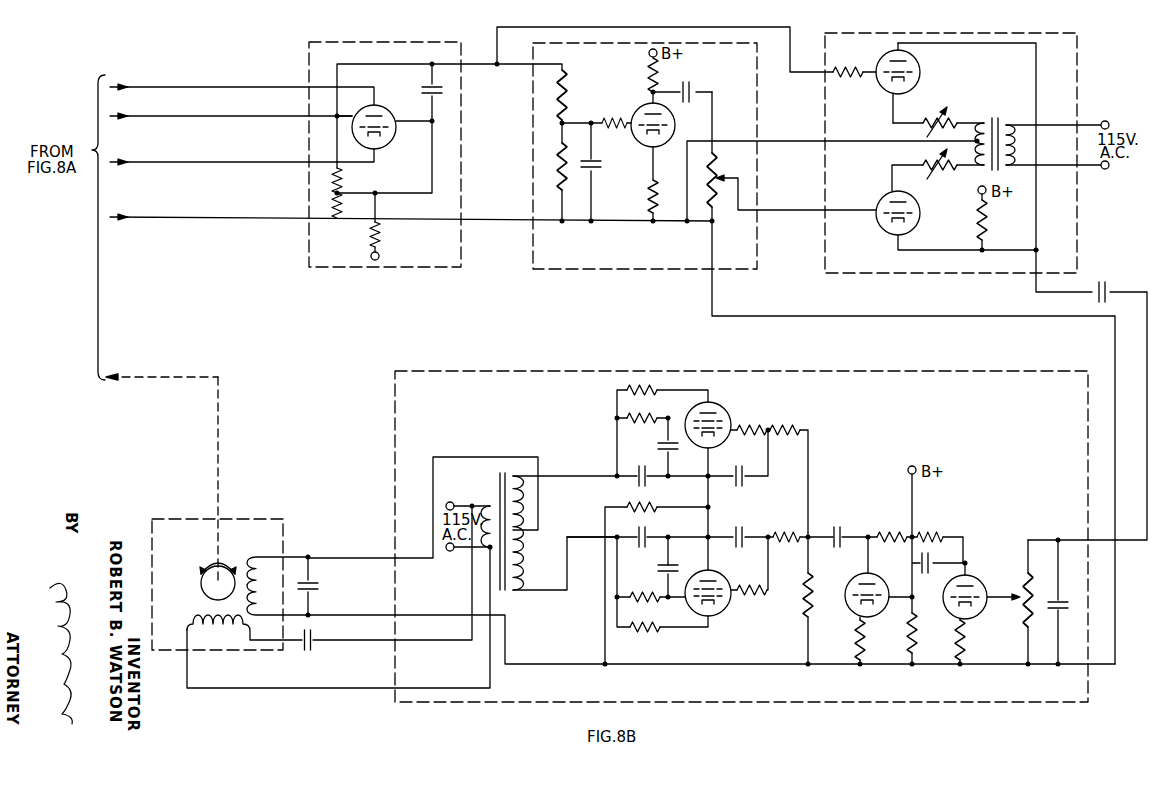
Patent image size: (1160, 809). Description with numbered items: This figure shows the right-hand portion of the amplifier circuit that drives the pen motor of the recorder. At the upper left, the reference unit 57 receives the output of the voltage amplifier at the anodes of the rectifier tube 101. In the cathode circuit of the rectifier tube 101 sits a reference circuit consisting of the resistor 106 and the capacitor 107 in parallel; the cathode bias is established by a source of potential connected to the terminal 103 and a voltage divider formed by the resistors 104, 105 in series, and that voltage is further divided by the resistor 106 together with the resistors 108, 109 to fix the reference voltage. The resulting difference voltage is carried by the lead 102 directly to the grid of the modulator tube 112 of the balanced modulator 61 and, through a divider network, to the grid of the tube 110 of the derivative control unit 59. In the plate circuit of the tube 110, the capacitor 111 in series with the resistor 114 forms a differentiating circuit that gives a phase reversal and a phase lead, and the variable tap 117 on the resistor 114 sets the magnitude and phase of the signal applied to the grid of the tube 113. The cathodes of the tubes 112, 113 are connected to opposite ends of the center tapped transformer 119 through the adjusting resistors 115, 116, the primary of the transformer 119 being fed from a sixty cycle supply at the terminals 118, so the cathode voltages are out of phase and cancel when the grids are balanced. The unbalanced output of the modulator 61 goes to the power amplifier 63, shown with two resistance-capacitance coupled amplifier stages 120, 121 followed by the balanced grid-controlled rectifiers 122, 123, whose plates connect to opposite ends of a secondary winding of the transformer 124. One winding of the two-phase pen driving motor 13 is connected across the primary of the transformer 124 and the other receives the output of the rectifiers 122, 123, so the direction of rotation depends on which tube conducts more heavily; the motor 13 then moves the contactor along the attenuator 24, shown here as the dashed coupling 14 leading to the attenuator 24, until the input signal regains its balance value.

The pen driving motor 13 is at (262, 518).
The shaft coupling to attenuator 14 is at (226, 438).
The attenuator 24 is at (187, 359).
The reference unit 57 is at (431, 268).
The derivative control unit 59 is at (634, 269).
The balanced modulator 61 is at (954, 273).
The power amplifier 63 is at (942, 702).
The rectifier tube 101 is at (382, 147).
The lead 102 is at (478, 60).
The terminal 103 is at (371, 256).
The resistor 104 is at (372, 240).
The resistor 105 is at (333, 207).
The resistor 106 is at (333, 186).
The capacitor 107 is at (428, 89).
The resistor 108 is at (570, 105).
The resistor 109 is at (560, 158).
The tube 110 is at (662, 145).
The capacitor 111 is at (699, 81).
The modulator tube 112 is at (920, 68).
The tube 113 is at (920, 215).
The resistor 114 is at (717, 170).
The adjusting resistor 115 is at (945, 114).
The adjusting resistor 116 is at (927, 178).
The tap 117 is at (734, 186).
The terminals 118 is at (1108, 120).
The center tapped transformer 119 is at (1002, 120).
The amplifier stage 120 is at (978, 614).
The amplifier stage 121 is at (847, 609).
The grid-controlled rectifier 122 is at (730, 611).
The grid-controlled rectifier 123 is at (731, 415).
The transformer 124 is at (496, 496).